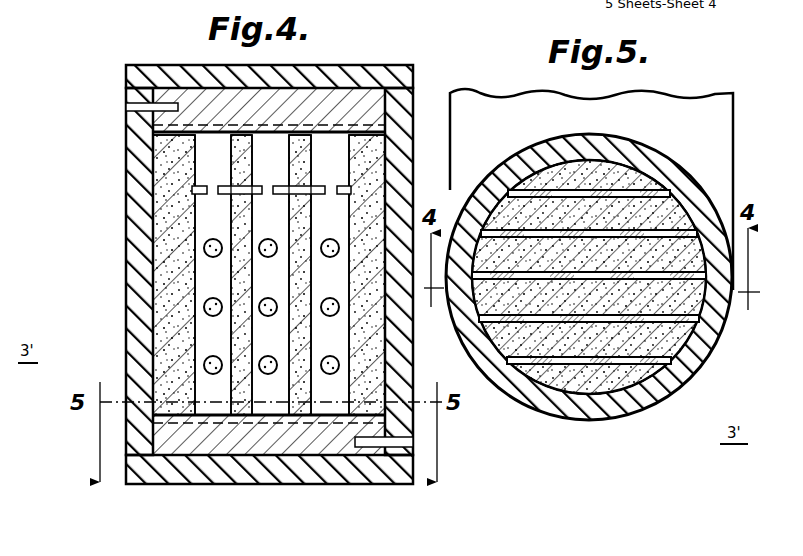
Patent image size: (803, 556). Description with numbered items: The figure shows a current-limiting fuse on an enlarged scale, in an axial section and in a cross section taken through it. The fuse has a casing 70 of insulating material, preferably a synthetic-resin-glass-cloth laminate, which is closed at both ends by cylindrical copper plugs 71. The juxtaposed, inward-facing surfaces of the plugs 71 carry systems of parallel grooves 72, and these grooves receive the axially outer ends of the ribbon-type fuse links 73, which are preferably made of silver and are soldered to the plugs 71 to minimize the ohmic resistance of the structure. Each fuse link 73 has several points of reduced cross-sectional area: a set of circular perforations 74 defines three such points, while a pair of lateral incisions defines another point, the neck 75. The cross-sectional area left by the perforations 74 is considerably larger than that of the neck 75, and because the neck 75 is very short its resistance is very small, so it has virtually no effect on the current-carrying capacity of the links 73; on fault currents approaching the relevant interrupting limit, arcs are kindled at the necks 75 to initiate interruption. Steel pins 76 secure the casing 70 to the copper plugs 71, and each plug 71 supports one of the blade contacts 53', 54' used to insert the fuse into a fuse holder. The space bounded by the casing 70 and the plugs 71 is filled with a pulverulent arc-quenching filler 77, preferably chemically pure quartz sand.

In FIG. 4, the blade contact 53' is at (269, 63).
In FIG. 4, the blade contact 54' is at (269, 493).
In FIG. 5, the blade contact 54' is at (607, 189).
In FIG. 4, the casing 70 is at (397, 125).
In FIG. 5, the casing 70 is at (595, 410).
In FIG. 4, the cylindrical copper plug 71 is at (290, 110).
In FIG. 5, the cylindrical copper plug 71 is at (621, 163).
In FIG. 4, the parallel groove 72 is at (338, 125).
In FIG. 5, the parallel groove 72 is at (476, 206).
In FIG. 4, the ribbon-type fuse link 73 is at (212, 407).
In FIG. 4, the circular perforation 74 is at (204, 248).
In FIG. 4, the neck 75 is at (195, 190).
In FIG. 4, the steel pin 76 is at (126, 108).
In FIG. 4, the pulverulent arc-quenching filler 77 is at (165, 158).
In FIG. 5, the pulverulent arc-quenching filler 77 is at (641, 393).